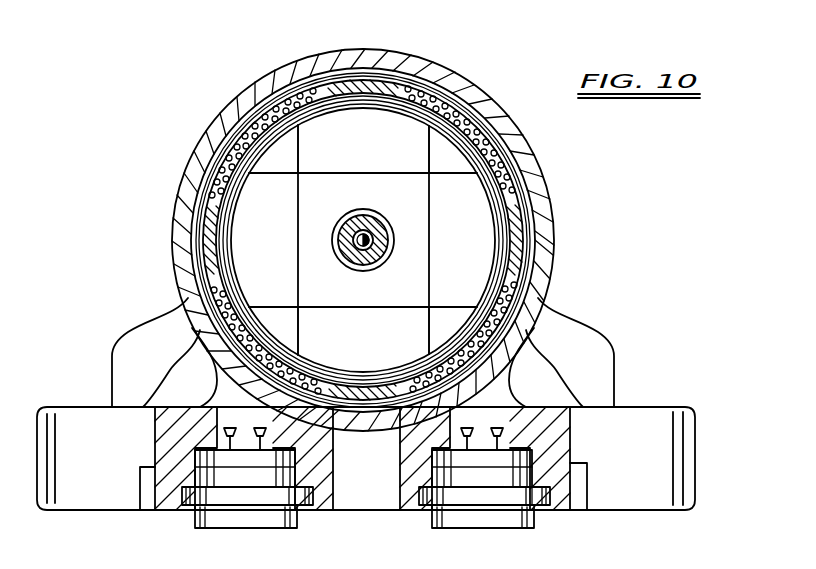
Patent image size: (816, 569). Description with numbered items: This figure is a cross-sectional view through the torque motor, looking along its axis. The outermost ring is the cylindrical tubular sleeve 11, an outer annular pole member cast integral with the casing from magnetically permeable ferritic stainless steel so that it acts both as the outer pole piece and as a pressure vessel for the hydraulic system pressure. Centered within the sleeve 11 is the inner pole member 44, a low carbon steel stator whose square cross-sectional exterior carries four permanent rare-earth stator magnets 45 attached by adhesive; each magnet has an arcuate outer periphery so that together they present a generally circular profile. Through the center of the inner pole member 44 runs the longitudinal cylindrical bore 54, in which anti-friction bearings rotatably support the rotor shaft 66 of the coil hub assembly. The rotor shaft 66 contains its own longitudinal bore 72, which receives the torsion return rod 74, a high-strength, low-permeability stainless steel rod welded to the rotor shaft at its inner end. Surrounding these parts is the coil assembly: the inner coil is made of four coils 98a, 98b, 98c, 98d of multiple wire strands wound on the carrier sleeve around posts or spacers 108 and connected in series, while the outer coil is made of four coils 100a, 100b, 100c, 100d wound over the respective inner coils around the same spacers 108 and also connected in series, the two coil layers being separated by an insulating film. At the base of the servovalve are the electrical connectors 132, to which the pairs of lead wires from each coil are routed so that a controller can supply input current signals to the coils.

The cylindrical tubular sleeve 11 is at (502, 133).
The spacers 108 is at (362, 78).
The inner coil 98a is at (458, 115).
The inner coil 98b is at (508, 283).
The inner coil 98c is at (305, 372).
The inner coil 98d is at (242, 168).
The outer coil 100a is at (443, 103).
The outer coil 100b is at (520, 290).
The outer coil 100c is at (218, 360).
The outer coil 100d is at (237, 158).
The inner pole member 44 is at (345, 203).
The permanent rare-earth stator magnets 45 is at (373, 145).
The longitudinal cylindrical bore 54 is at (370, 234).
The longitudinal bore 72 is at (372, 236).
The torsion return rod 74 is at (372, 249).
The rotor shaft 66 is at (358, 265).
The electrical connector 132 is at (195, 527).